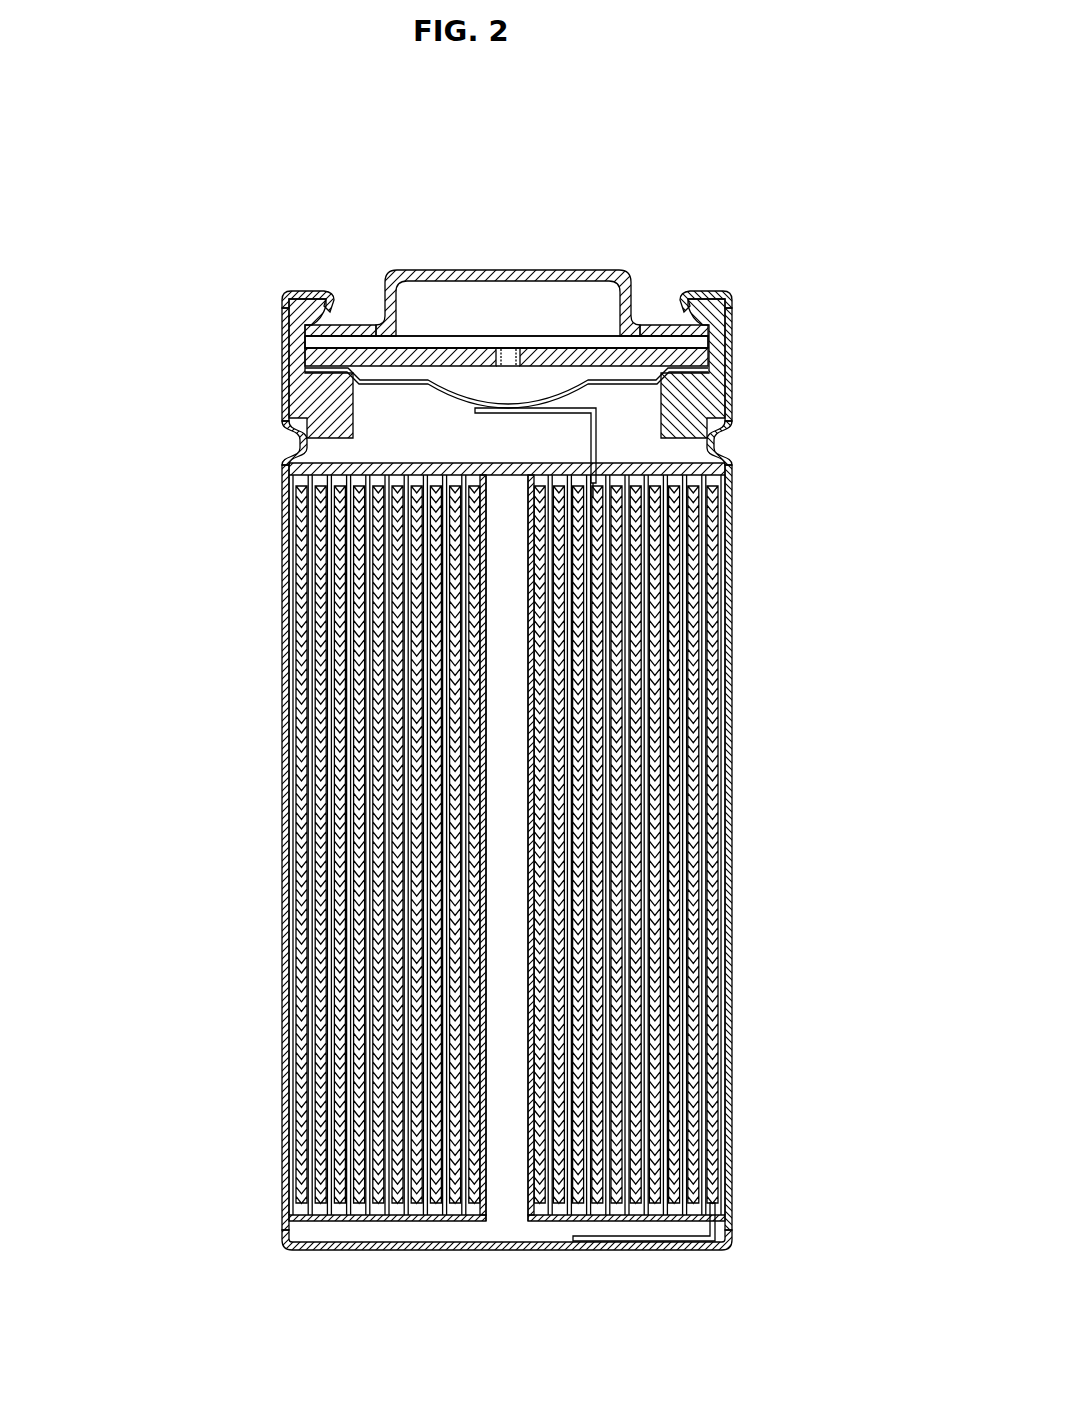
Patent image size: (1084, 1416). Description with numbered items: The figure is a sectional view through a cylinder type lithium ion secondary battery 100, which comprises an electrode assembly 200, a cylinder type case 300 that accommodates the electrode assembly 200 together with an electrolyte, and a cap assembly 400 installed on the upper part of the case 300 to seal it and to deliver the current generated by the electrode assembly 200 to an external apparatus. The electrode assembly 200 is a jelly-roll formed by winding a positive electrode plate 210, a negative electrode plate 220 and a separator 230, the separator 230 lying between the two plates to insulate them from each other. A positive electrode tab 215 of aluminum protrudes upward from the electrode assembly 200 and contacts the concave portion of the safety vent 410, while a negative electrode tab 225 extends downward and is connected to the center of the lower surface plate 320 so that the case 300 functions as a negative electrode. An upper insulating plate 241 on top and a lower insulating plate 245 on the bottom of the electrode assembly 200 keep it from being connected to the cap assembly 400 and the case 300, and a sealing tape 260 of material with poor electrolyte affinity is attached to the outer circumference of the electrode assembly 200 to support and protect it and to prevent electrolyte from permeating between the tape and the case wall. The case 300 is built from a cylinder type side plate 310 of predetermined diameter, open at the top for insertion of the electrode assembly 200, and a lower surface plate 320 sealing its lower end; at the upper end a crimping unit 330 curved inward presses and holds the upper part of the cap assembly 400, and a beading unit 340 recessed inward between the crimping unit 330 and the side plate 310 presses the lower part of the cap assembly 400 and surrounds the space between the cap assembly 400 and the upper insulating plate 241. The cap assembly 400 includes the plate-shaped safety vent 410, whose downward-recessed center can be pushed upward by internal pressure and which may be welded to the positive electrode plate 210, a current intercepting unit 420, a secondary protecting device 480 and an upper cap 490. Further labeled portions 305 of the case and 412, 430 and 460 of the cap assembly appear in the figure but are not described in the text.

The cylinder type lithium ion secondary battery 100 is at (760, 233).
The electrode assembly 200 is at (862, 430).
The positive electrode plate 210 is at (693, 645).
The positive electrode tab 215 is at (592, 412).
The negative electrode plate 220 is at (717, 532).
The negative electrode tab 225 is at (603, 1240).
The separator 230 is at (697, 600).
The upper insulating plate 241 is at (700, 458).
The lower insulating plate 245 is at (720, 1226).
The sealing tape 260 is at (457, 1152).
The cylinder type case 300 is at (136, 390).
The crimping portion 305 is at (298, 282).
The cylinder type side plate 310 is at (274, 517).
The lower surface plate 320 is at (300, 1242).
The crimping unit 330 is at (275, 291).
The beading unit 340 is at (291, 428).
The cap assembly 400 is at (630, 141).
The safety vent 410 is at (422, 326).
The flange 412 is at (663, 317).
The current intercepting unit 420 is at (573, 330).
The safety vent 430 is at (510, 342).
The vent plate 460 is at (492, 340).
The secondary protecting device 480 is at (605, 337).
The upper cap 490 is at (402, 262).